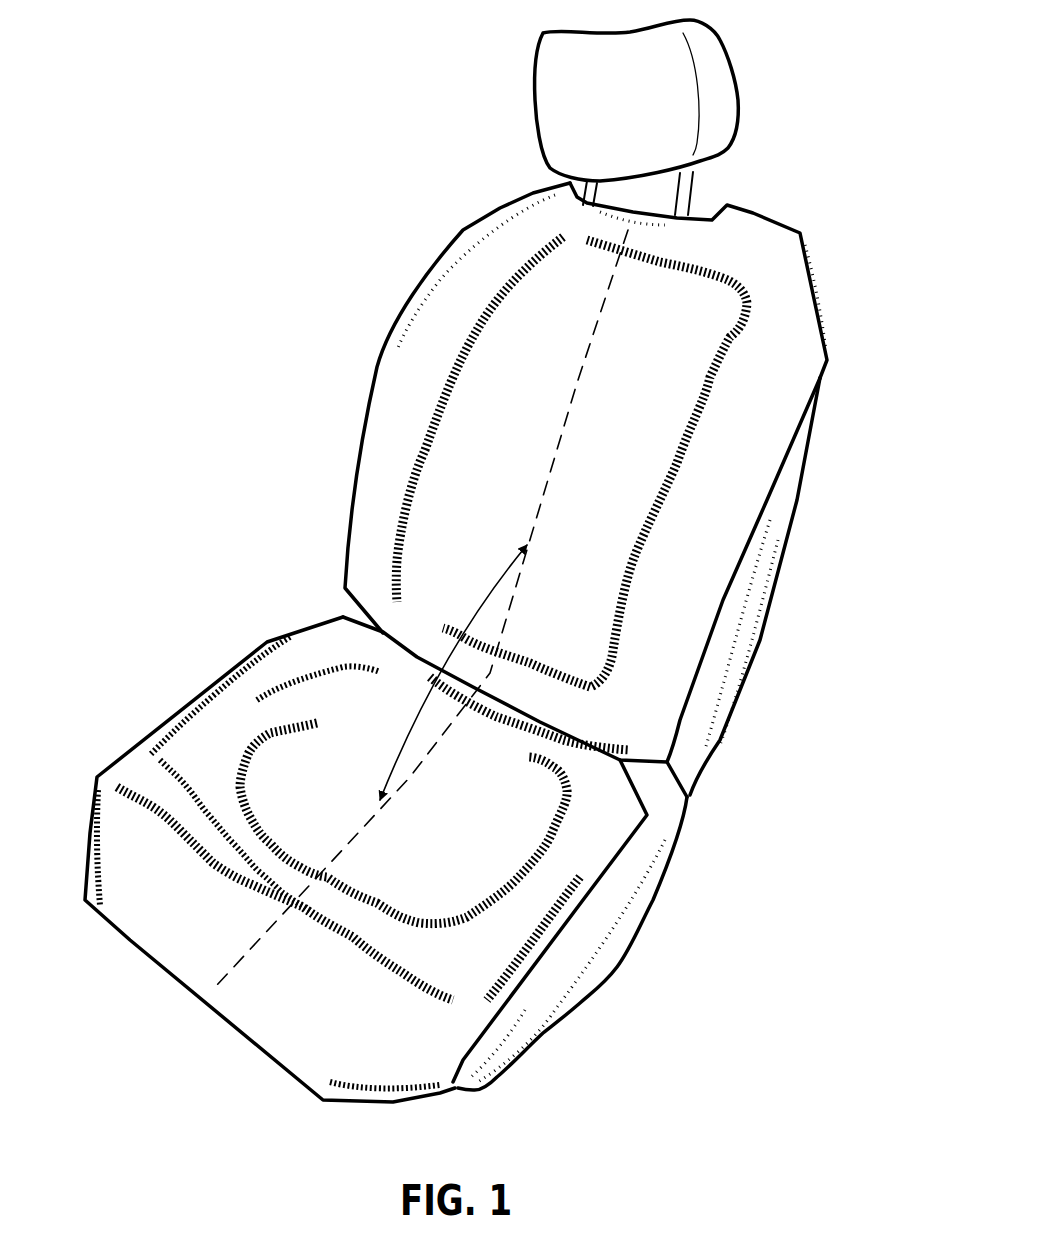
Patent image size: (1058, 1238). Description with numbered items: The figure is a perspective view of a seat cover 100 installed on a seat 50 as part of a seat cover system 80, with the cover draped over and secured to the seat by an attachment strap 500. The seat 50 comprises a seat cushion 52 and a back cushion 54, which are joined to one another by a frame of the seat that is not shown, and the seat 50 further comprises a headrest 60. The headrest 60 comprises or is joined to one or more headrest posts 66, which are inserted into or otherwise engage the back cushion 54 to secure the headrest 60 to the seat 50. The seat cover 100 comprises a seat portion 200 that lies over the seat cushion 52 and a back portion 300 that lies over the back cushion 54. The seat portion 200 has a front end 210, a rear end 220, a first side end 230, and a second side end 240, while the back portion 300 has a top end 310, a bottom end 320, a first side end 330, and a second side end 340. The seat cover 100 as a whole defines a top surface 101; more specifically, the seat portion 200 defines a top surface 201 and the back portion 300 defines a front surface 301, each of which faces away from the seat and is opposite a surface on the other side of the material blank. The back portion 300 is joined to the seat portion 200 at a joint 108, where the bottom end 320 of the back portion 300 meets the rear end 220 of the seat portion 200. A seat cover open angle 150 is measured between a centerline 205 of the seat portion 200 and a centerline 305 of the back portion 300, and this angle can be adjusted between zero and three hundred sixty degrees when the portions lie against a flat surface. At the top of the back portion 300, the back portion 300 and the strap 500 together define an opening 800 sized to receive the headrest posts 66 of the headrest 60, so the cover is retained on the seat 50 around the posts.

The seat cover system 80 is at (284, 186).
The headrest 60 is at (713, 75).
The headrest posts 66 is at (587, 186).
The opening 800 is at (633, 192).
The strap 500 is at (700, 204).
The top end 310 is at (607, 228).
The second side end 340 is at (393, 383).
The back portion 300 is at (366, 443).
The front surface 301 is at (571, 449).
The centerline 305 is at (600, 350).
The top surface 101 is at (753, 430).
The seat cover open angle 150 is at (473, 602).
The joint 108 is at (420, 662).
The first side end 330 is at (717, 540).
The back cushion 54 is at (747, 633).
The bottom end 320 is at (503, 683).
The rear end 220 is at (475, 733).
The second side end 240 is at (223, 713).
The seat portion 200 is at (127, 912).
The top surface 201 is at (373, 838).
The centerline 205 is at (253, 943).
The seat 50 is at (627, 895).
The seat cushion 52 is at (575, 953).
The first side end 230 is at (507, 943).
The seat cover 100 is at (190, 968).
The front end 210 is at (233, 1007).